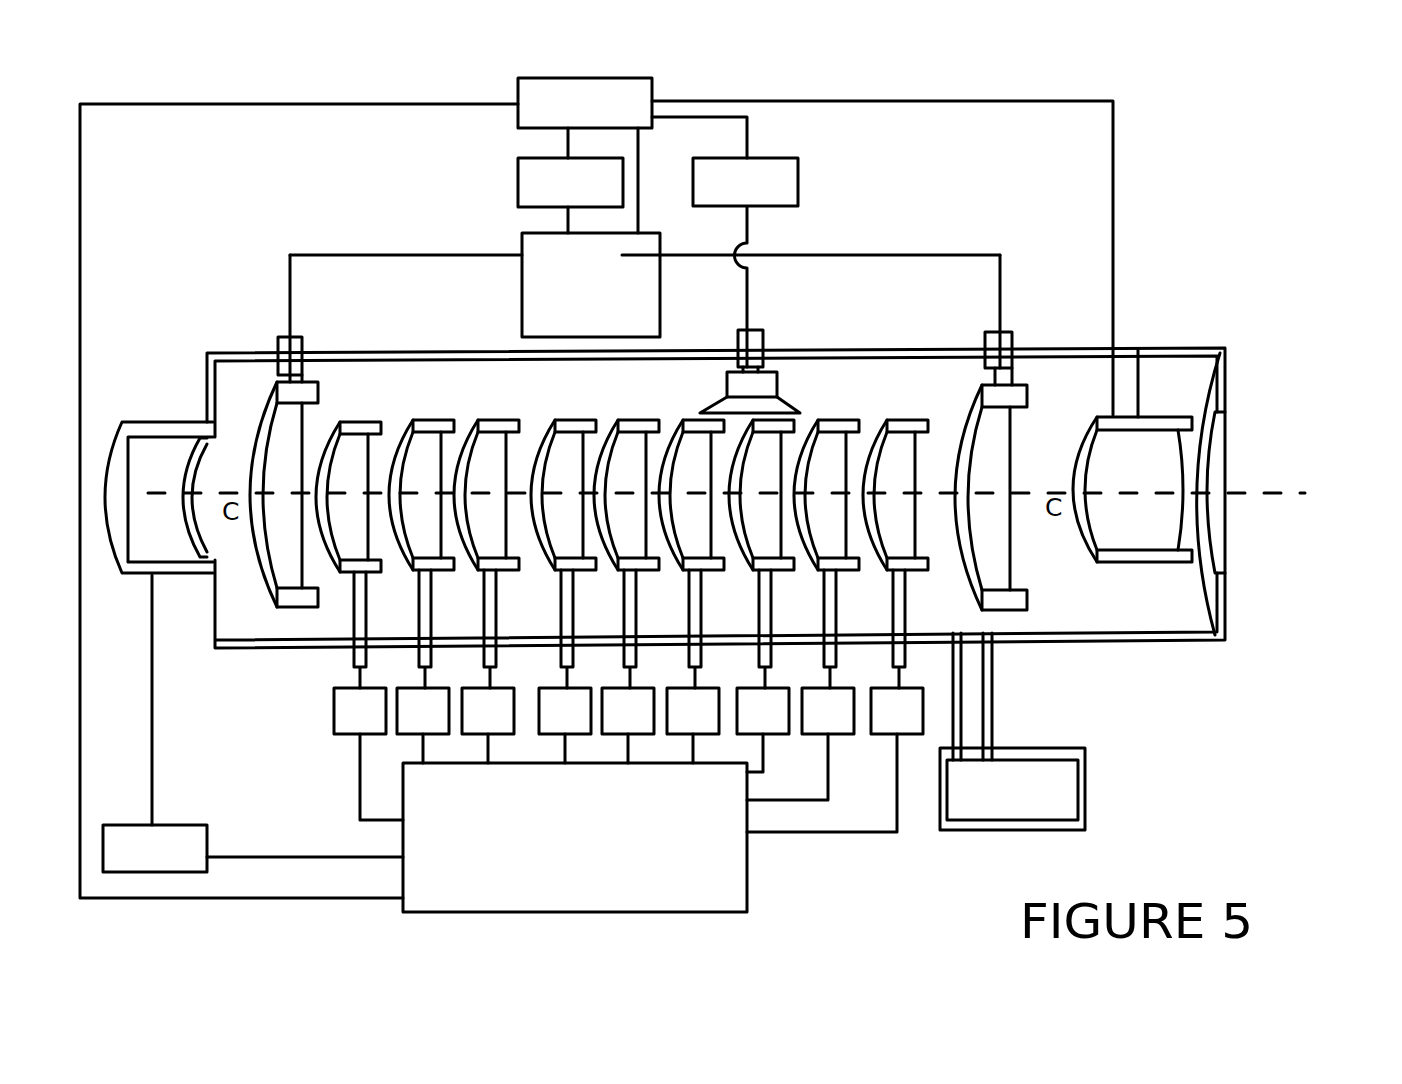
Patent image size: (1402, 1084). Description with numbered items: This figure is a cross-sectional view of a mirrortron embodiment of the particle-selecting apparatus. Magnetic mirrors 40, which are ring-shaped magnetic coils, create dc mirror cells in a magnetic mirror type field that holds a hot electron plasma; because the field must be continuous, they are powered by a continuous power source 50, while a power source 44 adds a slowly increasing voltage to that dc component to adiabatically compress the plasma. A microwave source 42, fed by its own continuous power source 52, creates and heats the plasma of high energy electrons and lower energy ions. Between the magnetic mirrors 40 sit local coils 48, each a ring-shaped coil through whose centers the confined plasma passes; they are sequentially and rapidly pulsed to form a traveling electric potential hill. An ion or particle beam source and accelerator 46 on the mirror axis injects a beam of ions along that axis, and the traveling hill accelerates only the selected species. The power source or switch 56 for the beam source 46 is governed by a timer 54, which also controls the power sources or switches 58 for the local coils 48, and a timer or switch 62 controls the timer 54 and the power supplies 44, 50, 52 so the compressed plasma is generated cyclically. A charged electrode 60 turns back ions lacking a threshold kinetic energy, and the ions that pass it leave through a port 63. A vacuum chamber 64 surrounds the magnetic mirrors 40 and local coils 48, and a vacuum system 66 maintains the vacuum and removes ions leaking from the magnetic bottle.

The magnetic mirrors 40 is at (275, 345).
The microwave source 42 is at (733, 362).
The power source 44 is at (518, 185).
The ion or particle beam source and accelerator 46 is at (134, 420).
The local coils 48 is at (375, 420).
The continuous power source 50 is at (522, 272).
The continuous power source 52 is at (798, 166).
The timer 54 is at (750, 853).
The power source or switch 56 is at (207, 847).
The power sources or switches 58 is at (336, 712).
The electrode 60 is at (1139, 355).
The timer or switch 62 is at (518, 117).
The port 63 is at (1203, 512).
The vacuum chamber 64 is at (1170, 642).
The vacuum system 66 is at (1085, 753).